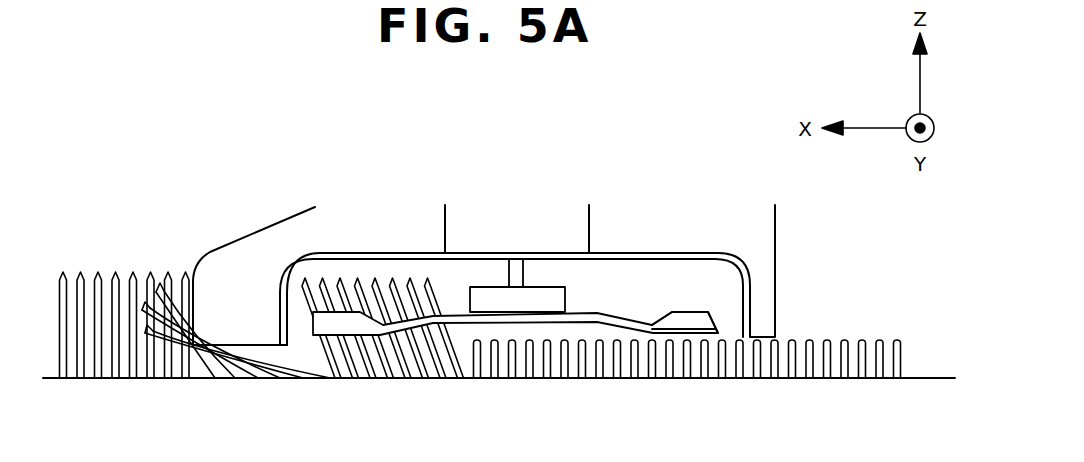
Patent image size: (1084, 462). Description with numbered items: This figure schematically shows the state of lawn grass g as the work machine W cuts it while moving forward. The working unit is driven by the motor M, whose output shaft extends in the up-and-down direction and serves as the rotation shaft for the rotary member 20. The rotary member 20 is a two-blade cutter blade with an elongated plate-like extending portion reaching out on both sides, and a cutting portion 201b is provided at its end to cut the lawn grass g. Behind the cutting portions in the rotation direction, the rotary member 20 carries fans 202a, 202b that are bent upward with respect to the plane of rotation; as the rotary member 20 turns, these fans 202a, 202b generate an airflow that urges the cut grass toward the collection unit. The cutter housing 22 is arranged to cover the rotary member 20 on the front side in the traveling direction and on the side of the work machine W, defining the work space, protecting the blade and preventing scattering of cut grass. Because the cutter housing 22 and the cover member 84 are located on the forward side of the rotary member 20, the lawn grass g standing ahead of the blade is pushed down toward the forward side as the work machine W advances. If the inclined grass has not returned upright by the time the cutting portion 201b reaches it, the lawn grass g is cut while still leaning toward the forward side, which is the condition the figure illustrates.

The lawn grass g is at (84, 243).
The work machine W is at (234, 190).
The motor M is at (590, 230).
The cover member 84 is at (197, 263).
The fan 202a is at (338, 283).
The fan 202b is at (708, 310).
The rotary member 20 is at (622, 318).
The cutter housing 22 is at (743, 270).
The cutting portion 201b is at (712, 337).